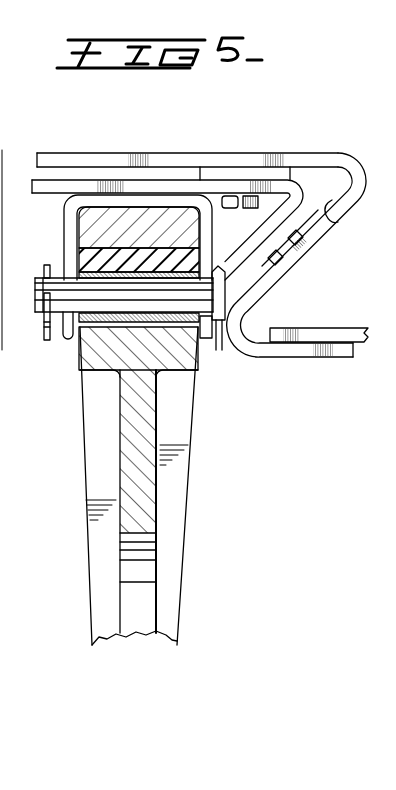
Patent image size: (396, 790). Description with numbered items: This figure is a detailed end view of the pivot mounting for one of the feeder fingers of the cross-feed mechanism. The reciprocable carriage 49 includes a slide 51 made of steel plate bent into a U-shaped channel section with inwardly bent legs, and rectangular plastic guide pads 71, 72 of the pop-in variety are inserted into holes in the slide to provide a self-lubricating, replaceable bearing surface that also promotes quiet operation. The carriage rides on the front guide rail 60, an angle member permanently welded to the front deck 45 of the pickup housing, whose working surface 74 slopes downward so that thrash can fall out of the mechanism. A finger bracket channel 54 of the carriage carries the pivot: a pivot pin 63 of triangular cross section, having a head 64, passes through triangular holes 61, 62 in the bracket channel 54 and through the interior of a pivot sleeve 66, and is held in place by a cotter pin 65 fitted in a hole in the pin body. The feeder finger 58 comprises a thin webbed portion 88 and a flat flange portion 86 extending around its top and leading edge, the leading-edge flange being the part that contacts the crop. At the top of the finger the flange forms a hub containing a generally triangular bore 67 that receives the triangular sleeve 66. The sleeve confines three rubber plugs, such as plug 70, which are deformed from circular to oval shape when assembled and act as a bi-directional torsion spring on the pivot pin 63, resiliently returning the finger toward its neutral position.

The front deck 45 is at (312, 332).
The reciprocable carriage 49 is at (131, 159).
The slide 51 is at (33, 178).
The finger bracket channel 54 is at (66, 218).
The feeder finger 58 is at (172, 489).
The front guide rail 60 is at (338, 163).
The triangular hole 61 is at (44, 326).
The triangular hole 62 is at (218, 258).
The pivot pin 63 is at (40, 292).
The head 64 is at (222, 345).
The cotter pin 65 is at (44, 266).
The pivot sleeve 66 is at (82, 340).
The triangular bore 67 is at (82, 364).
The resilient plug 70 is at (78, 258).
The guide pad 71 is at (220, 168).
The guide pad 72 is at (288, 265).
The working surface 74 is at (336, 224).
The flange portion 86 is at (90, 478).
The webbed portion 88 is at (140, 571).